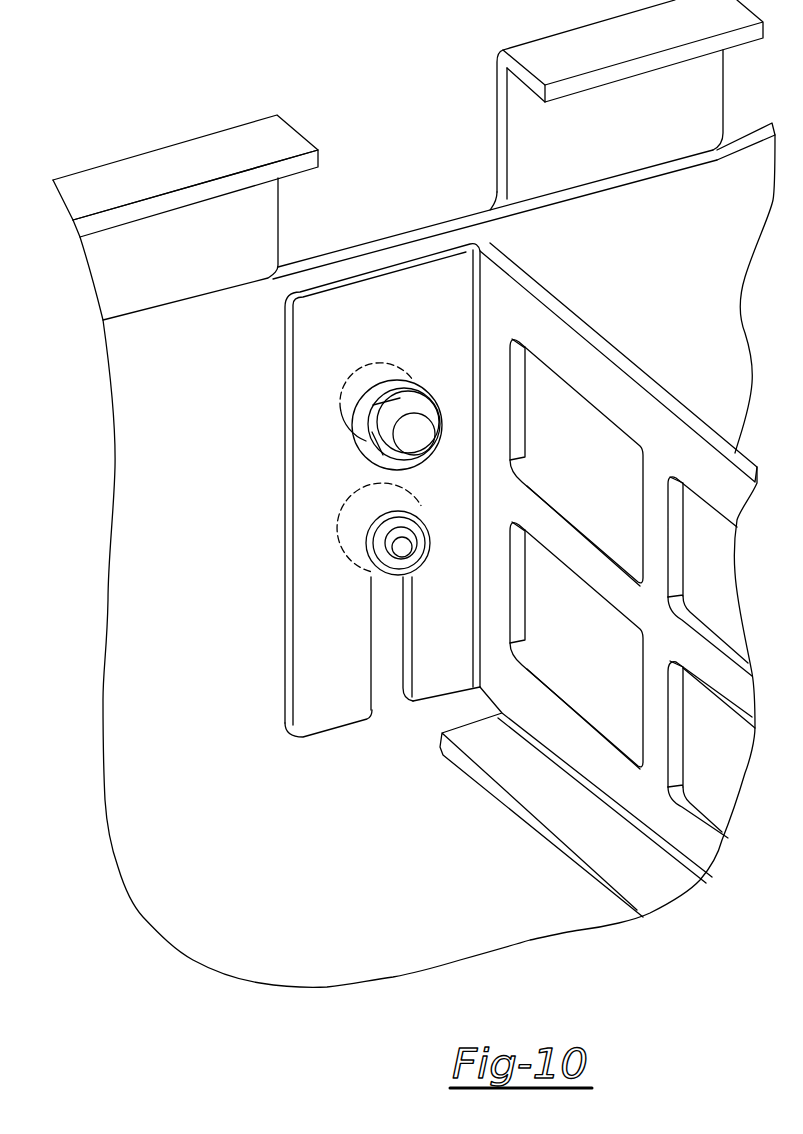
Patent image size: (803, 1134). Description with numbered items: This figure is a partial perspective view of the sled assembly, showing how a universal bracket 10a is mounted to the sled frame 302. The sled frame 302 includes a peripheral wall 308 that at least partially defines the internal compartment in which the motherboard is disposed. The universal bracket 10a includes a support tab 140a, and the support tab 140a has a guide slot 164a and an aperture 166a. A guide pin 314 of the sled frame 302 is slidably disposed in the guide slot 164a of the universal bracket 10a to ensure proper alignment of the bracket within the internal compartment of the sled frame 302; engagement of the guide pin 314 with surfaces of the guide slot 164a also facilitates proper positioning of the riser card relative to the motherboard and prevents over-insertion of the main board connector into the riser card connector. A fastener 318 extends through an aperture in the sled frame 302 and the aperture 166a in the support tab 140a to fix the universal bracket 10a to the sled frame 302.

The sled frame 302 is at (235, 143).
The peripheral wall 308 is at (183, 353).
The universal bracket 10a is at (583, 363).
The support tab 140a is at (325, 677).
The guide slot 164a is at (385, 680).
The aperture 166a is at (337, 406).
The fastener 318 is at (380, 455).
The guide pin 314 is at (390, 572).